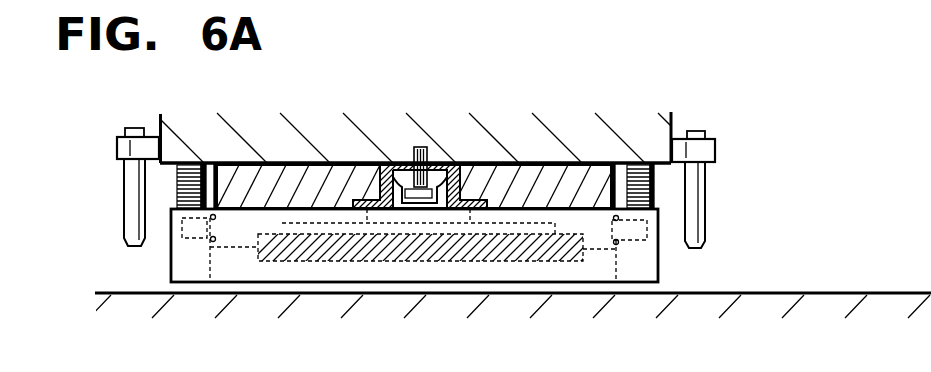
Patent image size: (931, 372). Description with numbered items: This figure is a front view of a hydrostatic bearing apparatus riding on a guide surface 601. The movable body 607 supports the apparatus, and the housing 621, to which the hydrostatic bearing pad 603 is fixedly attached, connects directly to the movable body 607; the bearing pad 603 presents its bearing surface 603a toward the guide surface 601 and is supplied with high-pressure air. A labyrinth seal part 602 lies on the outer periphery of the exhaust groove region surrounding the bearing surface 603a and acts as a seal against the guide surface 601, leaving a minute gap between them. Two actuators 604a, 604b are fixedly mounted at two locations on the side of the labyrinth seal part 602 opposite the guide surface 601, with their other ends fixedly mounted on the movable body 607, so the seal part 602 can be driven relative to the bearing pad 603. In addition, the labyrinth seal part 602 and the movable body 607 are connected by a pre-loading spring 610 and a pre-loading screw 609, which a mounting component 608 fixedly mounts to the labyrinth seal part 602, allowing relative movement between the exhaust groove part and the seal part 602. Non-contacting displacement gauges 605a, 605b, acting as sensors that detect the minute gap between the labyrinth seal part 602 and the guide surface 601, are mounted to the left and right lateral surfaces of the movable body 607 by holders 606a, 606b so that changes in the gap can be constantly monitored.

The guide surface 601 is at (147, 294).
The labyrinth seal part 602 is at (178, 260).
The hydrostatic bearing pad 603 is at (318, 262).
The bearing surface 603a is at (583, 262).
The actuator 604a is at (643, 185).
The actuator 604b is at (180, 182).
The non-contacting displacement gauge 605a is at (697, 131).
The non-contacting displacement gauge 605b is at (133, 128).
The holder 606a is at (712, 149).
The holder 606b is at (117, 147).
The movable body 607 is at (530, 135).
The mounting component 608 is at (447, 175).
The pre-loading screw 609 is at (415, 164).
The pre-loading spring 610 is at (363, 168).
The housing 621 is at (247, 195).